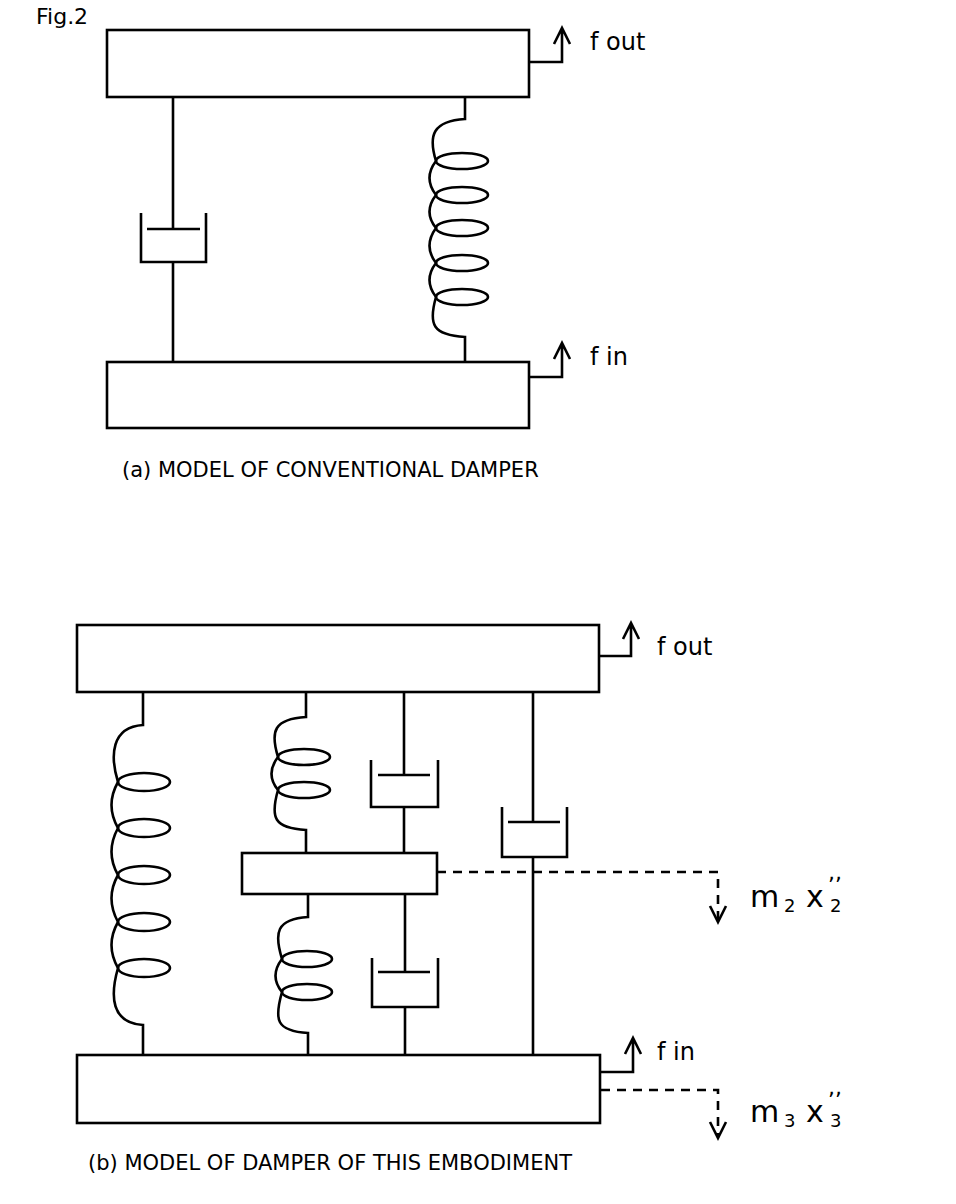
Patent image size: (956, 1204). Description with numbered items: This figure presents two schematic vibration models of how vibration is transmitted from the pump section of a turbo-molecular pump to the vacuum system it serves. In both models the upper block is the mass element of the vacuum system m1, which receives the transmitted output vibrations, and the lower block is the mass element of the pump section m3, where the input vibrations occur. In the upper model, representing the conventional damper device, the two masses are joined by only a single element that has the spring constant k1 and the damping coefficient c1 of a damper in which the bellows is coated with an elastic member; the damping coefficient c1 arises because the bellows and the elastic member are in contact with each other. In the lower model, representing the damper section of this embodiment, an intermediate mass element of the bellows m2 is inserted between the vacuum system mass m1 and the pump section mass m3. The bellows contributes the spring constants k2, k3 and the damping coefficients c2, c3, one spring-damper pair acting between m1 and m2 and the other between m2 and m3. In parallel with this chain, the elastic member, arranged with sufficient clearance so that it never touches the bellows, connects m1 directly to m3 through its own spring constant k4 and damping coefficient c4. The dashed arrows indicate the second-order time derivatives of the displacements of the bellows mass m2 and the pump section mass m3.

The mass element of the vacuum system m1 is at (338, 361).
The mass element of the bellows m2 is at (339, 873).
The mass element of the pump section m3 is at (338, 742).
The spring constant of damper in which bellows is coated with elastic member k1 is at (485, 229).
The spring constant of the bellows k2 is at (275, 773).
The spring constant of the bellows k3 is at (278, 975).
The spring constant of the elastic member k4 is at (110, 874).
The damping coefficient of damper in which bellows is coated with elastic member c1 is at (198, 229).
The damping coefficient of the bellows c2 is at (424, 772).
The damping coefficient of the bellows c3 is at (424, 974).
The damping coefficient of the elastic member c4 is at (556, 873).